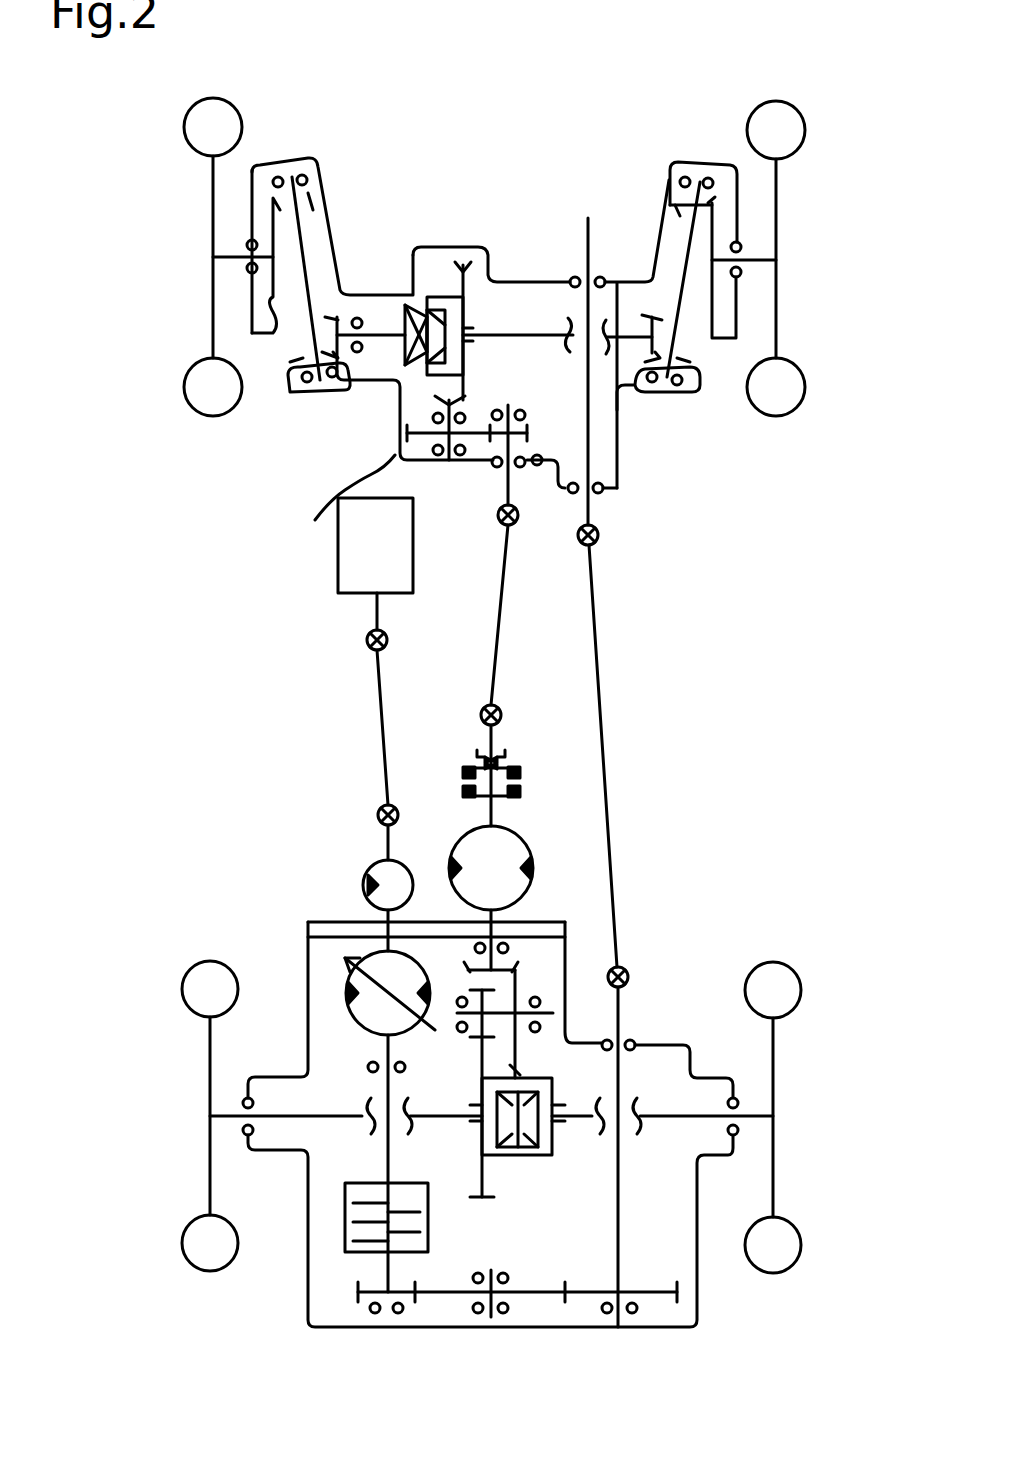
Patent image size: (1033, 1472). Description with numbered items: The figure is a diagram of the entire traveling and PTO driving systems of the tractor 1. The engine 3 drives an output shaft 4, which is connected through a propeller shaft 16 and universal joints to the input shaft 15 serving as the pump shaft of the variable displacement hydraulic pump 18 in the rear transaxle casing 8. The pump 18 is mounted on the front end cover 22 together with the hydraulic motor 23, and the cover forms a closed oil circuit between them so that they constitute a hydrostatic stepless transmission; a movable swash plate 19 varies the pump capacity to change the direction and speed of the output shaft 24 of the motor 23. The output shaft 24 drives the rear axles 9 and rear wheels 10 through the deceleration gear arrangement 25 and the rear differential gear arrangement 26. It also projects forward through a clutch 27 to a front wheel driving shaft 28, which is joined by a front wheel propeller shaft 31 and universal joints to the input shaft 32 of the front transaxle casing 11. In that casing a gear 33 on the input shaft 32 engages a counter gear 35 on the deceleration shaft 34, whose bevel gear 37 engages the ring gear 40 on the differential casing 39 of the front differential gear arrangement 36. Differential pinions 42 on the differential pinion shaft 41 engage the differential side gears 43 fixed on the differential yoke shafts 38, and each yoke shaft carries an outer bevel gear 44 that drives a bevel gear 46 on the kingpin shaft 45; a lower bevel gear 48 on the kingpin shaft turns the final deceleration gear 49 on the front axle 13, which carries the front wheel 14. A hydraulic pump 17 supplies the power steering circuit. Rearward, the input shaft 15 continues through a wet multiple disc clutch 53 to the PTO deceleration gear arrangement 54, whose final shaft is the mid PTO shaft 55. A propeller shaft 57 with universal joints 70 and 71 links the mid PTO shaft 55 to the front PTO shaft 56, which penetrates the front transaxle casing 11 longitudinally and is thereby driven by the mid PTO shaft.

The tractor 1 is at (778, 592).
The engine 3 is at (338, 590).
The output shaft 4 is at (385, 628).
The rear transaxle casing 8 is at (660, 1040).
The rear axles 9 is at (228, 1118).
The rear wheels 10 is at (208, 1262).
The front transaxle casing 11 is at (530, 150).
The front axles 13 is at (252, 275).
The front wheels 14 is at (190, 128).
The input shaft 15 is at (380, 838).
The propeller shaft 16 is at (380, 722).
The hydraulic pump 17 is at (368, 862).
The variable displacement hydraulic pump 18 is at (348, 1015).
The movable swash plate 19 is at (340, 960).
The front end cover 22 is at (325, 925).
The hydraulic motor 23 is at (515, 830).
The output shaft 24 is at (470, 915).
The deceleration gear arrangement 25 is at (558, 982).
The rear differential gear arrangement 26 is at (536, 1175).
The clutch 27 is at (538, 738).
The front wheel driving shaft 28 is at (480, 735).
The front wheel propeller shaft 31 is at (505, 645).
The input shaft 32 is at (500, 480).
The gear 33 is at (528, 522).
The deceleration shaft 34 is at (442, 462).
The counter gear 35 is at (400, 455).
The front differential gear arrangement 36 is at (512, 298).
The bevel gear 37 is at (337, 500).
The differential yoke shafts 38 is at (538, 315).
The differential casing 39 is at (458, 262).
The ring gear 40 is at (470, 280).
The differential pinion shaft 41 is at (435, 297).
The differential pinions 42 is at (398, 320).
The differential side gears 43 is at (395, 330).
The bevel gear 44 is at (340, 290).
The kingpin shaft 45 is at (305, 170).
The bevel gear 46 is at (305, 395).
The bevel gear 48 is at (308, 182).
The final deceleration gear 49 is at (283, 345).
The wet multiple disc clutch 53 is at (325, 1232).
The PTO deceleration gear arrangement 54 is at (537, 1240).
The mid PTO shaft 55 is at (622, 1240).
The front PTO shaft 56 is at (598, 535).
The propeller shaft 57 is at (600, 655).
The universal joint 70 is at (630, 978).
The universal joint 71 is at (600, 548).